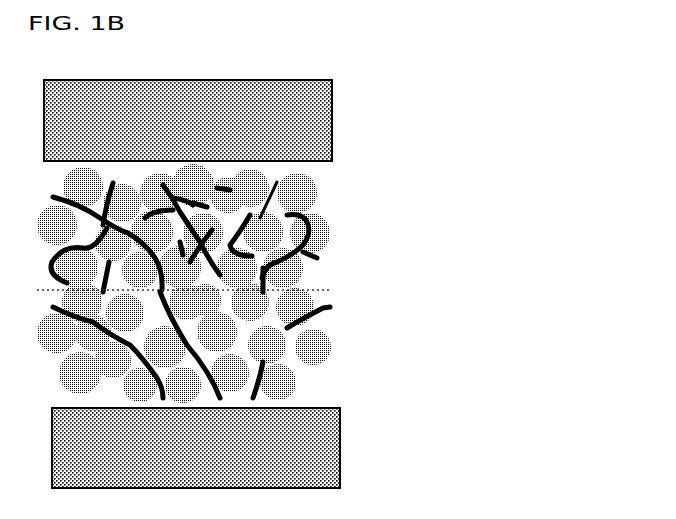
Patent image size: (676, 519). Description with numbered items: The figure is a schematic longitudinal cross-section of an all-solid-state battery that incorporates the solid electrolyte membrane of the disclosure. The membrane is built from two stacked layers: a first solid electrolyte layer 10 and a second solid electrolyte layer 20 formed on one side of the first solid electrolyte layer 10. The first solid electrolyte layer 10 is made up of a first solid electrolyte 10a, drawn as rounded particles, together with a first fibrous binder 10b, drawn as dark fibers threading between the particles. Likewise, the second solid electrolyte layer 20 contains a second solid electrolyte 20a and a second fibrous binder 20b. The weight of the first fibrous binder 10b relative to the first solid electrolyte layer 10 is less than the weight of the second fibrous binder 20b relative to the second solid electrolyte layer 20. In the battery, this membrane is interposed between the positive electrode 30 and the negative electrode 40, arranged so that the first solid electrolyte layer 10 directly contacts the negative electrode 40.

The first solid electrolyte layer 10 is at (312, 342).
The first solid electrolyte 10a is at (330, 357).
The first fibrous binder 10b is at (337, 310).
The second solid electrolyte layer 20 is at (312, 228).
The second solid electrolyte 20a is at (313, 198).
The second fibrous binder 20b is at (318, 258).
The positive electrode 30 is at (331, 120).
The negative electrode 40 is at (341, 453).